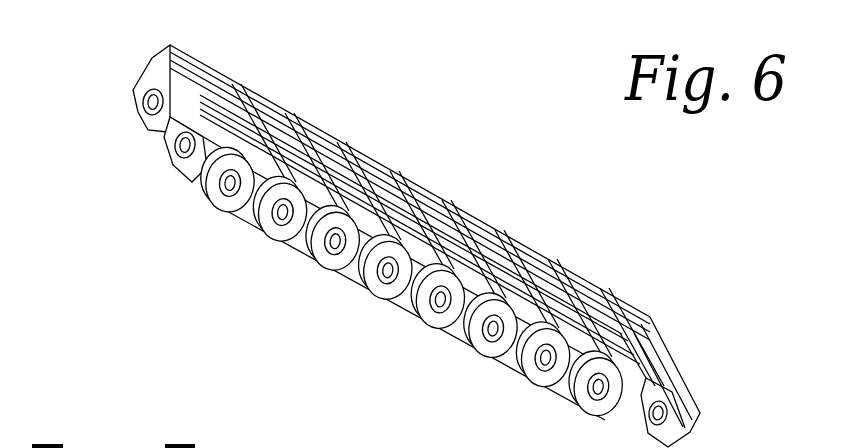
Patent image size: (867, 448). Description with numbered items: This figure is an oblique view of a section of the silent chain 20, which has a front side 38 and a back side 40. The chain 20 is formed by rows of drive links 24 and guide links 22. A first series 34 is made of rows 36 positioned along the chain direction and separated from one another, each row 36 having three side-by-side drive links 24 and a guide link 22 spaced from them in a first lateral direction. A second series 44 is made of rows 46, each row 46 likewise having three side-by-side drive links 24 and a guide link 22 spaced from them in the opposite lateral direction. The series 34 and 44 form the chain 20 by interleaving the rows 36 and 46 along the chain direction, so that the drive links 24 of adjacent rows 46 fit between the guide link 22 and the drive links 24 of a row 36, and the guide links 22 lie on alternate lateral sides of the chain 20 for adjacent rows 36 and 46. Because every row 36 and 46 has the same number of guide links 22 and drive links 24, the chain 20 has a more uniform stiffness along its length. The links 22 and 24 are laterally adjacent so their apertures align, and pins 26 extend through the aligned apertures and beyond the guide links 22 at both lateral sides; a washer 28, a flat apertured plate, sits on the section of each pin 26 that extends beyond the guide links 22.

The silent chain 20 is at (407, 229).
The guide link 22 is at (472, 210).
The drive link 24 is at (322, 150).
The pin 26 is at (228, 185).
The washer 28 is at (280, 220).
The first series 34 is at (650, 288).
The row 36 is at (237, 220).
The front side 38 is at (187, 185).
The back side 40 is at (257, 115).
The second series 44 is at (155, 152).
The row 46 is at (283, 70).